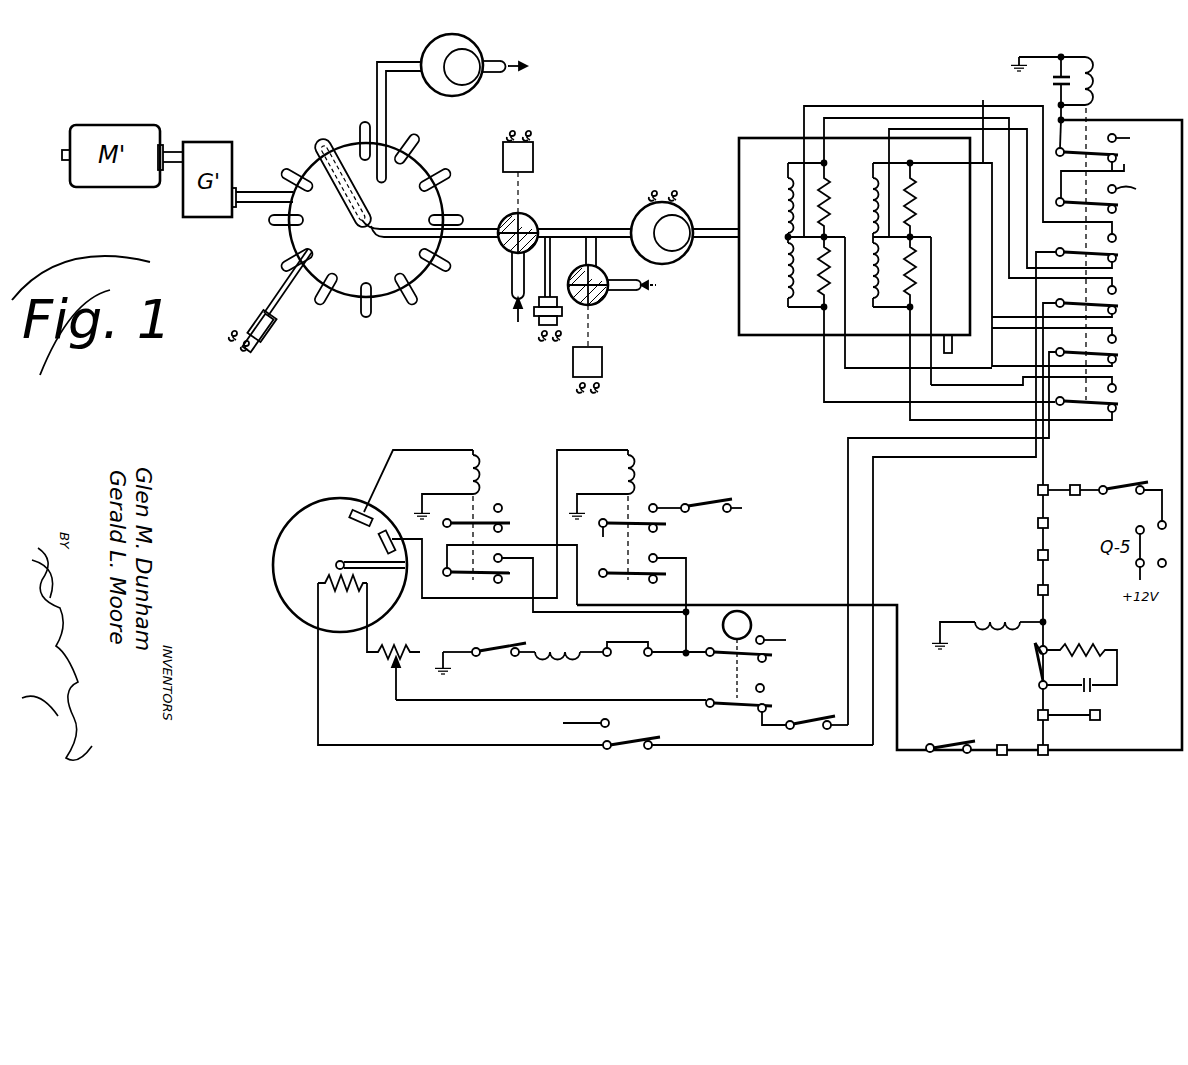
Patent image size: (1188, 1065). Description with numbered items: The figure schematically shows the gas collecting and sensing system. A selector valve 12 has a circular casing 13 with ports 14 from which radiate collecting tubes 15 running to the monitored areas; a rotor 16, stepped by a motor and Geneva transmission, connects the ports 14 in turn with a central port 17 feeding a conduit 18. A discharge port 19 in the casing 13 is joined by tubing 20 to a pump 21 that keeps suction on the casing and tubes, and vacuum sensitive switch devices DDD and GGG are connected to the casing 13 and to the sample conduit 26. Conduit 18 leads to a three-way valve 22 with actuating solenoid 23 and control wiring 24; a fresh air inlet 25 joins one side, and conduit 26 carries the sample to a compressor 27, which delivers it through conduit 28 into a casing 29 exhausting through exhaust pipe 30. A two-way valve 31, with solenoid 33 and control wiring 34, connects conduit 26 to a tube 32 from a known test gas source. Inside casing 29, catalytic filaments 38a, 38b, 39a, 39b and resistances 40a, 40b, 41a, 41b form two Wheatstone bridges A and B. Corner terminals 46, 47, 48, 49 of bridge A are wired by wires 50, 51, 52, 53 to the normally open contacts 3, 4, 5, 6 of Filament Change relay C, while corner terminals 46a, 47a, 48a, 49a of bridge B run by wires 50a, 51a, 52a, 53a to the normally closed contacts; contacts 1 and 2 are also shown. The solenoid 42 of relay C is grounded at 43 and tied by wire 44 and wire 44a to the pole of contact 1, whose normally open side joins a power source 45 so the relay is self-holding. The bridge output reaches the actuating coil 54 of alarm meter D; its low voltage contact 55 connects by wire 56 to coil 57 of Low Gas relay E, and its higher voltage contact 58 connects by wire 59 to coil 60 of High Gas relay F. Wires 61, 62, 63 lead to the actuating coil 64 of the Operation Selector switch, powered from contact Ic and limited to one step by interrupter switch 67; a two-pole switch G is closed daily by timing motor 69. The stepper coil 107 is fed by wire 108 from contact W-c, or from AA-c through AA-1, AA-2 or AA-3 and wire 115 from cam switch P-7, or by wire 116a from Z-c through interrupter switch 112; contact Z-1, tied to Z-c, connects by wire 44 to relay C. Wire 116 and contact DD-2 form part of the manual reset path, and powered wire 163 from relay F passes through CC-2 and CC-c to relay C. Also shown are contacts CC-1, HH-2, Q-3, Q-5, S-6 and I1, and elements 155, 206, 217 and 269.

The selector valve 12 is at (306, 162).
The circular casing 13 is at (375, 296).
The ports 14 is at (365, 275).
The tubes 15 is at (430, 152).
The rotor 16 is at (336, 205).
The central port 17 is at (355, 228).
The conduit 18 is at (473, 238).
The discharge port 19 is at (385, 180).
The tubing 20 is at (375, 98).
The pump 21 is at (463, 95).
The three-way valve 22 is at (536, 218).
The actuating solenoid 23 is at (536, 158).
The control wiring 24 is at (536, 128).
The fresh air inlet 25 is at (510, 290).
The sample conduit 26 is at (578, 228).
The compressor 27 is at (634, 223).
The pump motor leads 269 is at (648, 190).
The conduit 28 is at (712, 240).
The casing 29 is at (730, 205).
The exhaust pipe 30 is at (953, 348).
The two-way valve 31 is at (602, 320).
The tube 32 is at (622, 292).
The actuating solenoid 33 is at (550, 340).
The control wiring 34 is at (565, 376).
The catalytic gas sensing filament 38a is at (780, 190).
The catalytic gas sensing filament 38b is at (782, 292).
The catalytic gas sensing filament 39a is at (870, 204).
The catalytic gas sensing filament 39b is at (885, 290).
The resistance 40a is at (830, 200).
The resistance 40b is at (820, 280).
The resistance 41a is at (916, 200).
The resistance 41b is at (917, 262).
The solenoid 42 is at (1094, 76).
The ground 43 is at (1040, 55).
The wire 44 is at (1178, 118).
The wire 44a is at (1058, 104).
The power source 45 is at (1115, 136).
The corner terminal 46 is at (780, 238).
The corner terminal 46a is at (826, 238).
The corner terminal 47 is at (823, 245).
The corner terminal 47a is at (914, 237).
The corner terminal 48 is at (826, 163).
The corner terminal 48a is at (914, 165).
The corner terminal 49 is at (830, 312).
The corner terminal 49a is at (908, 312).
The wire 50 is at (800, 104).
The wire 50a is at (932, 115).
The wire 51 is at (856, 370).
The wire 51a is at (908, 395).
The wire 52 is at (950, 112).
The wire 52a is at (1011, 223).
The wire 53 is at (810, 380).
The wire 53a is at (962, 422).
The actuating coil 54 is at (336, 585).
The low voltage contact 55 is at (375, 540).
The wire 56 is at (555, 470).
The coil 57 is at (624, 474).
The higher voltage contact 58 is at (346, 522).
The wire 59 is at (378, 470).
The coil 60 is at (468, 470).
The wire 61 is at (572, 614).
The wire 62 is at (689, 582).
The wire 63 is at (686, 658).
The actuating coil 64 is at (548, 657).
The interrupter switch 67 is at (484, 655).
The timing motor 69 is at (752, 625).
The actuating coil 107 is at (990, 618).
The wire 108 is at (1045, 622).
The automatic interrupter switch 112 is at (1035, 663).
The wire 115 is at (1103, 494).
The wire 116 is at (1065, 720).
The wire 116a is at (1047, 705).
The contact 155 is at (560, 726).
The powered wire 163 is at (898, 682).
The switch 206 is at (675, 500).
The relay contact 217 is at (608, 528).
The relay contact 1 is at (1115, 163).
The relay contact 2 is at (1113, 196).
The relay contact 3 is at (995, 487).
The relay contact 4 is at (1080, 515).
The relay contact 5 is at (983, 527).
The relay contact 6 is at (1087, 395).
The Wheatstone bridge A is at (744, 276).
The Wheatstone bridge B is at (933, 244).
The Filament Change relay C is at (1123, 104).
The alarm meter D is at (296, 518).
The Low Gas relay E is at (643, 467).
The High Gas relay F is at (484, 465).
The two-pole switch G is at (778, 679).
The vacuum sensitive switch device DDD is at (248, 318).
The vacuum sensitive switch device GGG is at (535, 328).
The switch HH-2 is at (705, 497).
The contact I-c Ic is at (604, 660).
The contact I1 is at (646, 660).
The switch Q-5 is at (777, 705).
The switch Q-3 is at (630, 752).
The switch S-6 is at (818, 722).
The cam switch P-7 is at (1115, 485).
The stepper switch contact AA-1 is at (1037, 523).
The stepper switch contact AA-2 is at (1037, 490).
The stepper switch contact AA-3 is at (1076, 484).
The stepper switch common contact AA-c is at (1037, 555).
The stepper switch common contact W-c is at (1037, 595).
The stepper switch common contact Z-c is at (1037, 720).
The stepper switch contact Z-1 is at (1047, 758).
The stepper switch contact DD-2 is at (1120, 716).
The switch CC-1 is at (962, 755).
The stepper switch contact CC-2 is at (930, 742).
The stepper switch common contact CC-c is at (1002, 756).